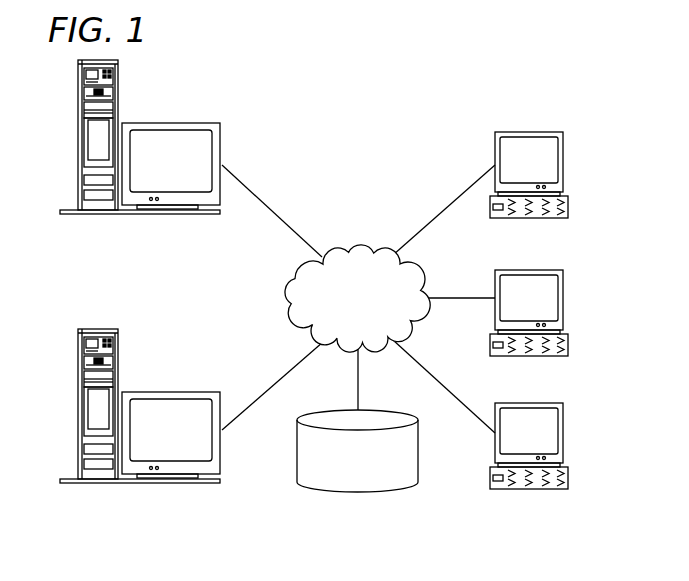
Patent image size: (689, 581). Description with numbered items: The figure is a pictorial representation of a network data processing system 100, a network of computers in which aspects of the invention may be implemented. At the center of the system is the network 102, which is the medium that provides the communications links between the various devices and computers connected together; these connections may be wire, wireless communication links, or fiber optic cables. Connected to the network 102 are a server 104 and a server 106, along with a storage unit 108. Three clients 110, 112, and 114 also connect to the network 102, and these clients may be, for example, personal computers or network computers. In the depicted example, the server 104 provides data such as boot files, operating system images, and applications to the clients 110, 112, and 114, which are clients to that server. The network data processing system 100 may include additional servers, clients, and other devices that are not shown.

The network data processing system 100 is at (412, 137).
The network 102 is at (362, 250).
The server 104 is at (77, 403).
The server 106 is at (77, 142).
The storage unit 108 is at (373, 490).
The client 110 is at (565, 162).
The client 112 is at (565, 297).
The client 114 is at (565, 433).